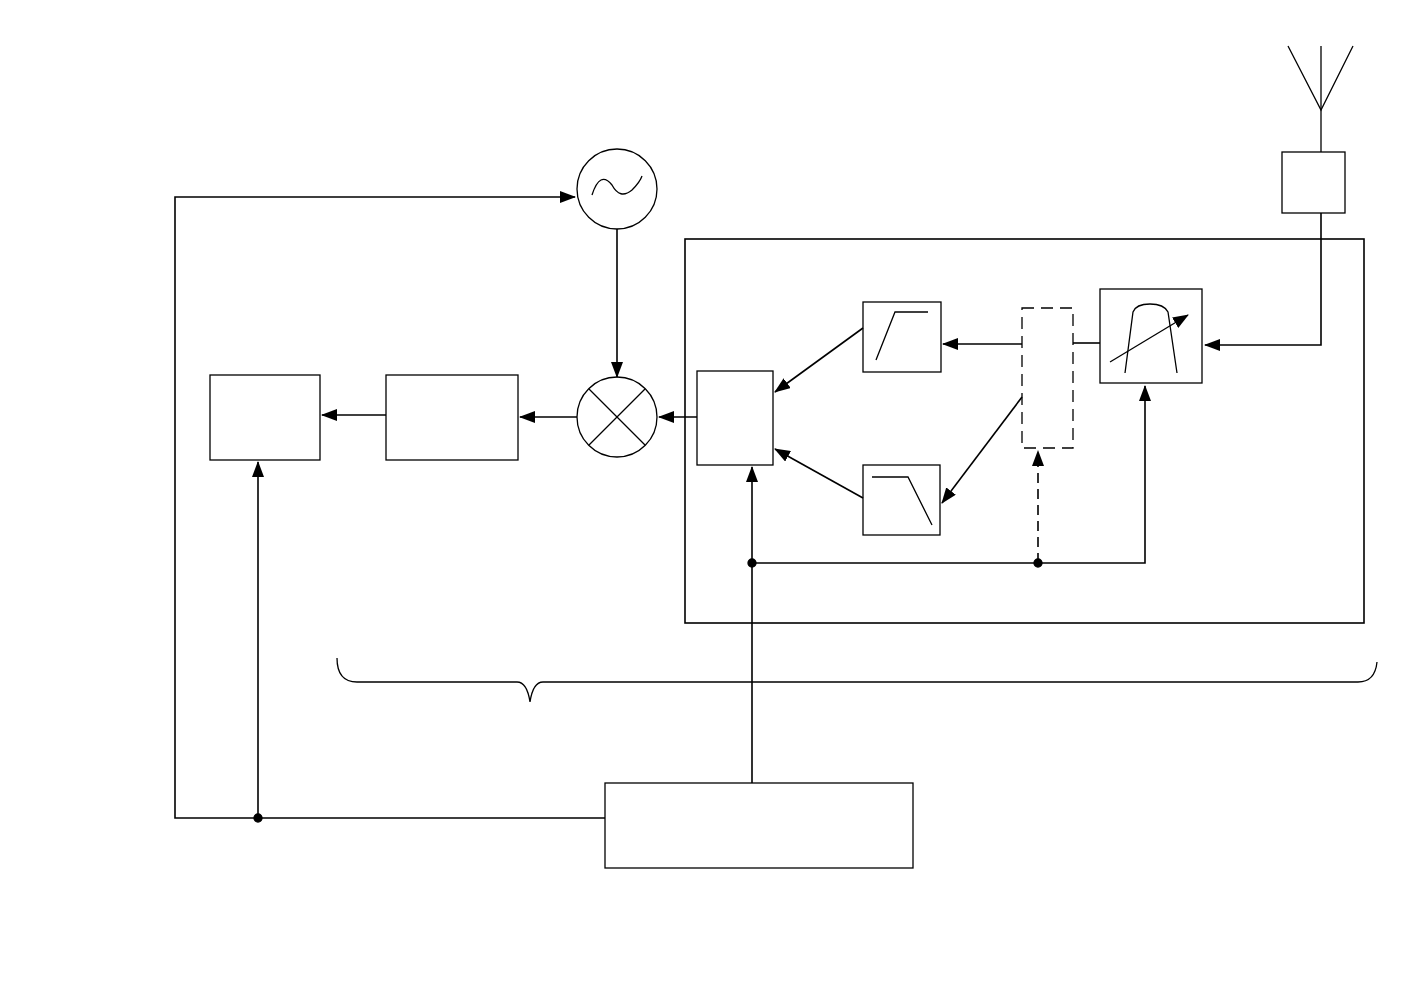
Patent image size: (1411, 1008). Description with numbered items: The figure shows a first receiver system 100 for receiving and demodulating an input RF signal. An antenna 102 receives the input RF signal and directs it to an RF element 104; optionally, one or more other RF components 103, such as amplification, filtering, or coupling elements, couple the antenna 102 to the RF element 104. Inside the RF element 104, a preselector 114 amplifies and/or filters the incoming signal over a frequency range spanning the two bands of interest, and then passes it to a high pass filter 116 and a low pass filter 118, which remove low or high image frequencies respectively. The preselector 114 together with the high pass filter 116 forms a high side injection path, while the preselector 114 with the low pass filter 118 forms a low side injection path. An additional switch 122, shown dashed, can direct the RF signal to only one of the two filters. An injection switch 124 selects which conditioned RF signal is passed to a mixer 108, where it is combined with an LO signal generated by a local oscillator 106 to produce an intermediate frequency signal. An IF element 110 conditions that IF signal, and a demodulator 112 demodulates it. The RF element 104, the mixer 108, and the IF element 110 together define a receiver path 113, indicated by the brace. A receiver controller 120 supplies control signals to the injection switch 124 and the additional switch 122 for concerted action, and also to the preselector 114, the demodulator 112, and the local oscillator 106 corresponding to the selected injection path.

The receiver system 100 is at (1253, 813).
The antenna 102 is at (1298, 99).
The other RF components 103 is at (1313, 182).
The RF element 104 is at (1024, 431).
The local oscillator 106 is at (645, 189).
The mixer 108 is at (617, 441).
The IF element 110 is at (452, 399).
The demodulator 112 is at (265, 402).
The receiver path 113 is at (857, 698).
The preselector 114 is at (1151, 320).
The high pass filter 116 is at (902, 323).
The low pass filter 118 is at (901, 486).
The receiver controller 120 is at (759, 825).
The additional switch 122 is at (1047, 378).
The injection switch 124 is at (735, 418).